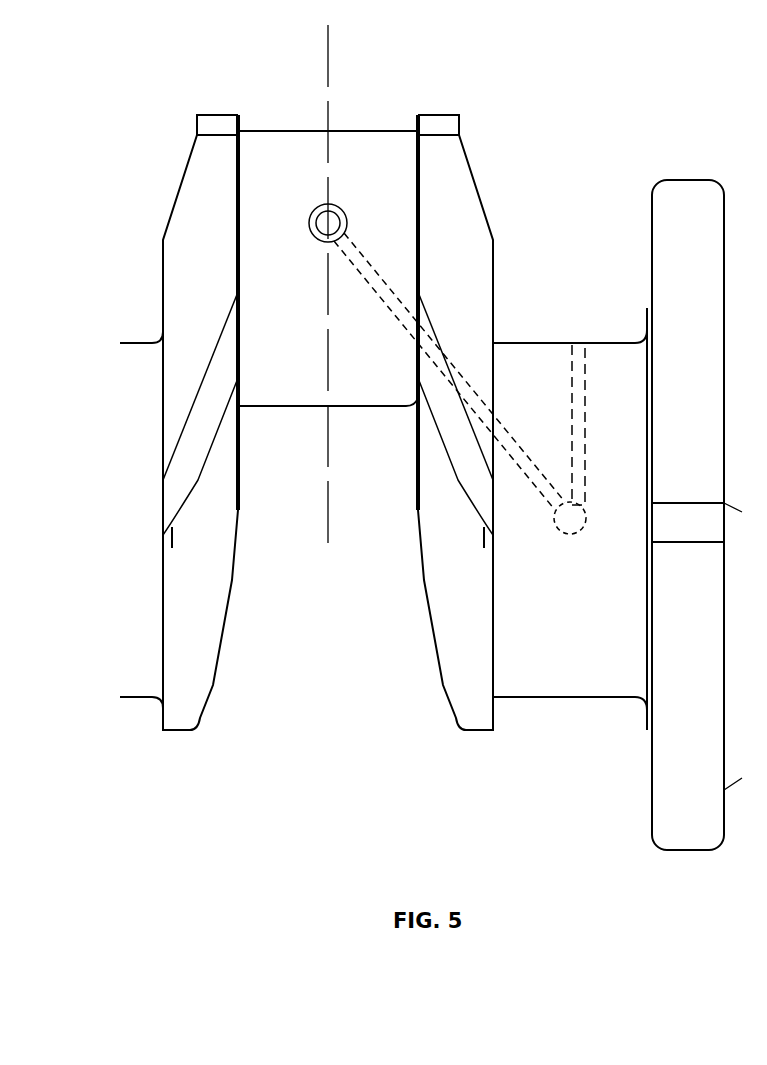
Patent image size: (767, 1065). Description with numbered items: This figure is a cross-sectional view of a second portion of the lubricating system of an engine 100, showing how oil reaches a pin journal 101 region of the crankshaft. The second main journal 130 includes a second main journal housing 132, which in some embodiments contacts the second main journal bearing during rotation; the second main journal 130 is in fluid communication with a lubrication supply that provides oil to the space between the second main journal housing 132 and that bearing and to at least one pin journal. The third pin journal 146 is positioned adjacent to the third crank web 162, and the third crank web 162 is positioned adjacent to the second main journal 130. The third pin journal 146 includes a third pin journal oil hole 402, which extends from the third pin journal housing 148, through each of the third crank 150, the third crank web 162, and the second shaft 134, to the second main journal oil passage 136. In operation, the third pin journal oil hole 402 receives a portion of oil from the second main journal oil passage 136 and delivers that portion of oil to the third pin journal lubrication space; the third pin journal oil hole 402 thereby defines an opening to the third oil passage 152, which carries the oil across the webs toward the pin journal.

The crankshaft 100 is at (102, 131).
The crank pin 101 is at (106, 378).
The second main journal 130 is at (587, 724).
The second main journal housing 132 is at (540, 343).
The second shaft 134 is at (535, 618).
The second main journal oil passage 136 is at (580, 343).
The third pin journal 146 is at (292, 421).
The third pin journal housing 148 is at (260, 130).
The third crank 150 is at (380, 190).
The third oil passage 152 is at (402, 328).
The third crank web 162 is at (458, 729).
The third pin journal oil hole 402 is at (320, 208).